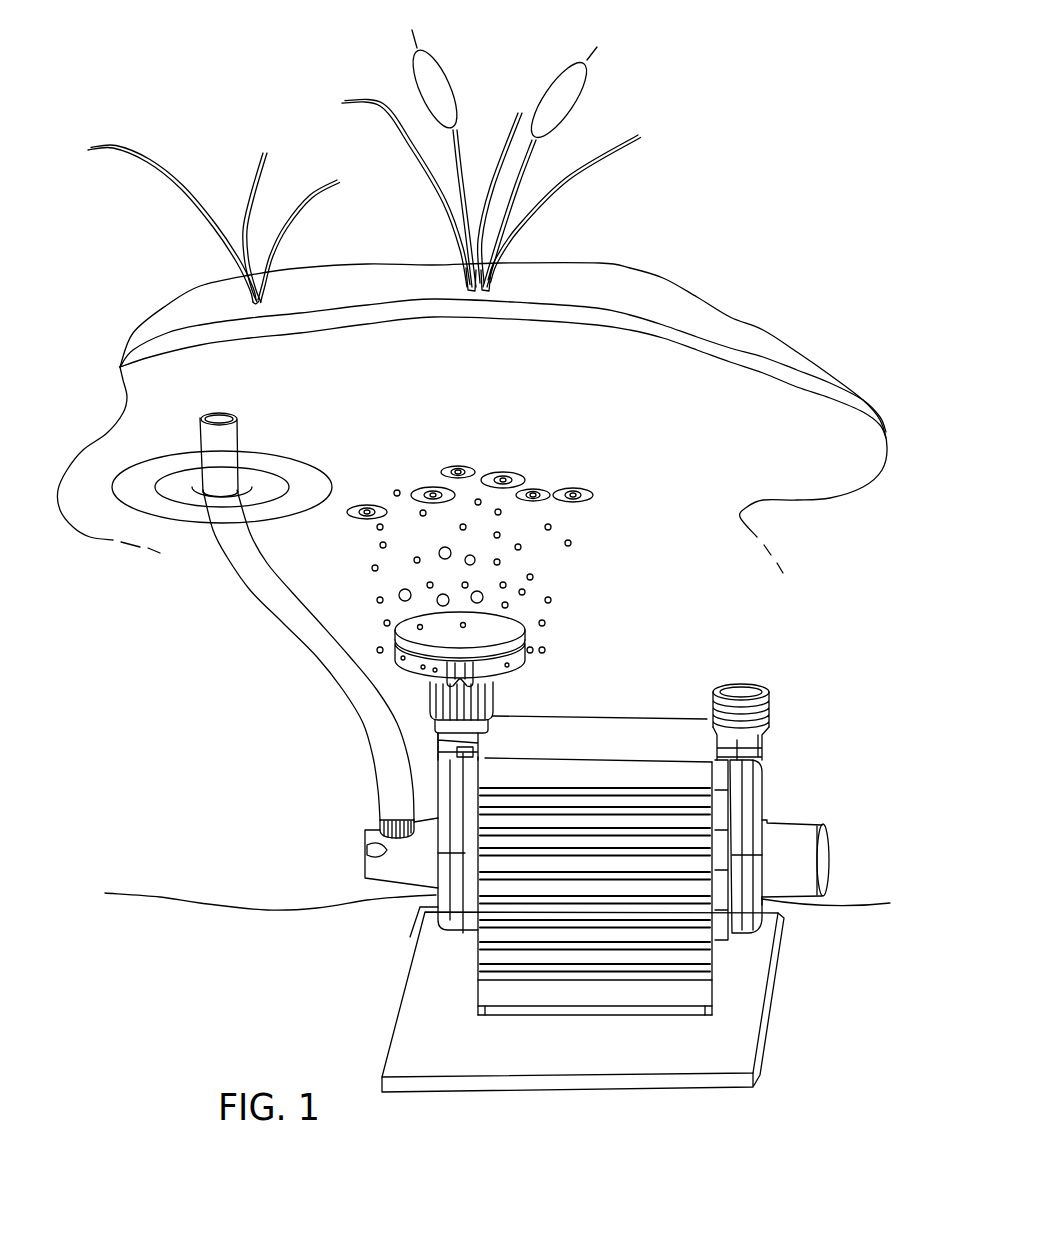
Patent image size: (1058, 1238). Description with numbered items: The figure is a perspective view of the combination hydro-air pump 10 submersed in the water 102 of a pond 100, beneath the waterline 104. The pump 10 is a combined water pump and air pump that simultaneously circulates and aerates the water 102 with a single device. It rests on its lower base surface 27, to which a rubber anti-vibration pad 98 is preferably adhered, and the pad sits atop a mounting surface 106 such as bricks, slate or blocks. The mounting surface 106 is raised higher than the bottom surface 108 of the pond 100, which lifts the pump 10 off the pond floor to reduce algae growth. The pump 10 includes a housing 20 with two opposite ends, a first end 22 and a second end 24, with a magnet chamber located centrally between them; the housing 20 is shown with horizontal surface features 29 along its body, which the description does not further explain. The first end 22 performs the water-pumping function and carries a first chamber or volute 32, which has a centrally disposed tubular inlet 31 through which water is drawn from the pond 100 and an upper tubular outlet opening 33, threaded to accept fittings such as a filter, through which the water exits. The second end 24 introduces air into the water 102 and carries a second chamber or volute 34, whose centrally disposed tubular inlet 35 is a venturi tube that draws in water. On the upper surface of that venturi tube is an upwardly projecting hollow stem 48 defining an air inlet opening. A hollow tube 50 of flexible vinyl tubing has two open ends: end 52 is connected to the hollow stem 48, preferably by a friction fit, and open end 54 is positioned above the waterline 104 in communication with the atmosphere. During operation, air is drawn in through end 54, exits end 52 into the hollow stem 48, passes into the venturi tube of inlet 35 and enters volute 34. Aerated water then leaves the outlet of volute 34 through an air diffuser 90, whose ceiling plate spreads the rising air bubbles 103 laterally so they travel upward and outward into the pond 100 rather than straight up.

The combination hydro-air pump 10 is at (778, 668).
The housing 20 is at (643, 706).
The first end 22 is at (800, 812).
The second end 24 is at (352, 843).
The lower base surface 27 is at (507, 1017).
The cooling fins 29 is at (623, 957).
The tubular inlet 31 is at (828, 850).
The first chamber or volute 32 is at (777, 910).
The upper tubular outlet opening 33 is at (738, 682).
The second chamber or volute 34 is at (422, 894).
The tubular inlet 35 is at (363, 865).
The hollow stem 48 is at (380, 826).
The hollow tube 50 is at (312, 652).
The end of hollow tube 52 is at (400, 818).
The open end of hollow tube 54 is at (230, 413).
The air diffuser 90 is at (540, 622).
The rubber anti-vibration pad 98 is at (693, 1017).
The pond 100 is at (775, 326).
The water 102 is at (306, 450).
The air bubbles 103 is at (571, 543).
The waterline 104 is at (78, 445).
The mounting surface 106 is at (658, 1045).
The bottom surface 108 is at (213, 902).